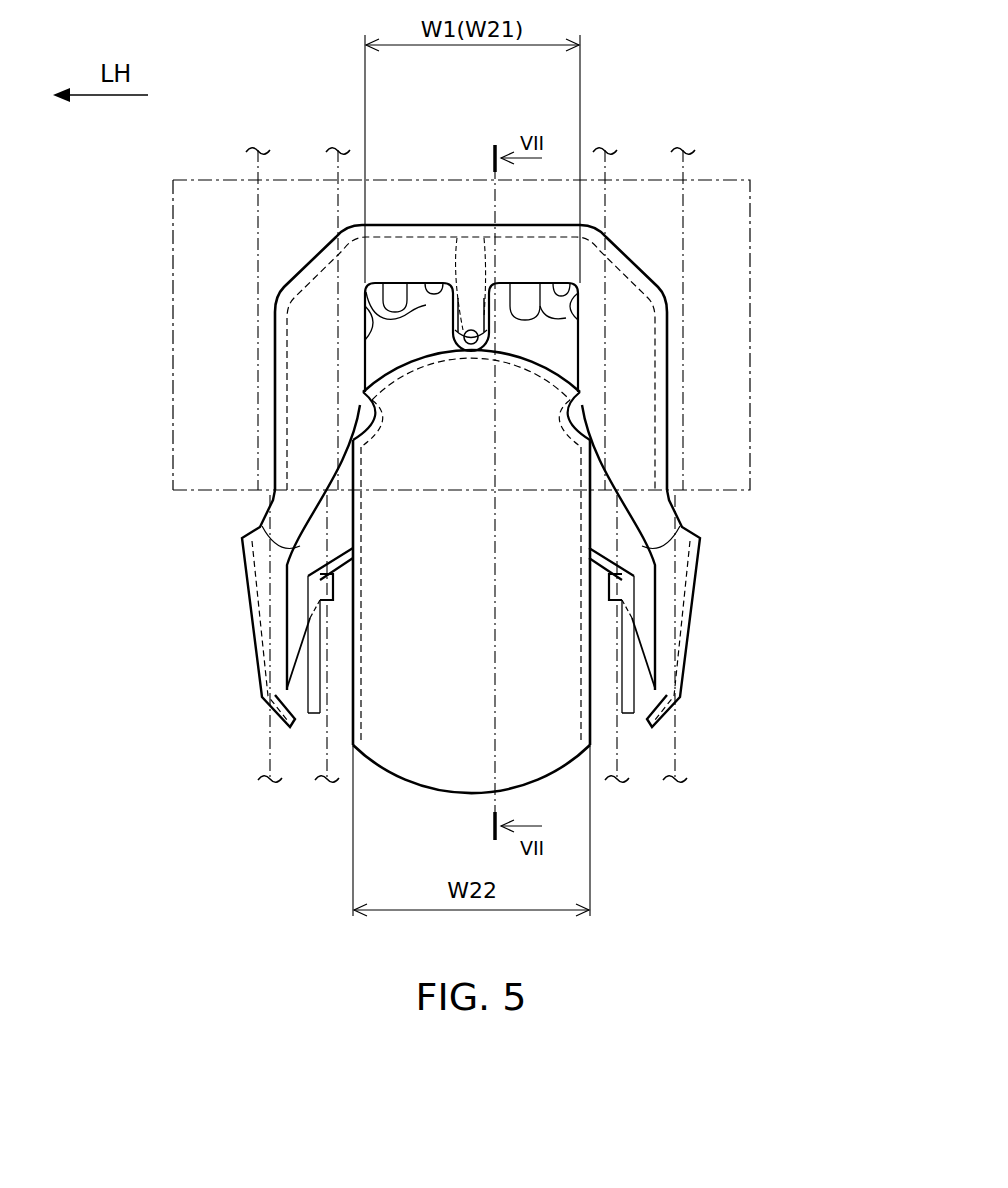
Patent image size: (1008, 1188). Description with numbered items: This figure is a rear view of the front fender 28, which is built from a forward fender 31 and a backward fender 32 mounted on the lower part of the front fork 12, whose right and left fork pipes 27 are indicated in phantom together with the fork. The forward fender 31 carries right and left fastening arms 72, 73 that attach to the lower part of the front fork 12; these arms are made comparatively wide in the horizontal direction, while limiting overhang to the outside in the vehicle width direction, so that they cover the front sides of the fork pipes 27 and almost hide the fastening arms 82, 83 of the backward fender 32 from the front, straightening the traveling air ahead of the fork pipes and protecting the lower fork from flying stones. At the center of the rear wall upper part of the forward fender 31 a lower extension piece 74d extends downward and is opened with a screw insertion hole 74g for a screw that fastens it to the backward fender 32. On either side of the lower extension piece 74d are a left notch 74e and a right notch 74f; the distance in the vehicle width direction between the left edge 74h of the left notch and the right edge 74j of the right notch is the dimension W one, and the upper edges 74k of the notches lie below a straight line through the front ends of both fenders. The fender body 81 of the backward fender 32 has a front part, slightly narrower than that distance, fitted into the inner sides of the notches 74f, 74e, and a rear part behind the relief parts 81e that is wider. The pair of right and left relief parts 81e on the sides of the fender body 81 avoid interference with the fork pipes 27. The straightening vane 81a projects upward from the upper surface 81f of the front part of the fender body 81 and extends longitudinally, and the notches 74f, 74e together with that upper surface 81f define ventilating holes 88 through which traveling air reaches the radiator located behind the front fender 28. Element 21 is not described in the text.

The front fork 12 is at (256, 258).
The front fender 28 is at (150, 286).
The fork pipes 27 is at (258, 333).
The housing 21 is at (752, 258).
The forward fender 31 is at (643, 266).
The lower extension piece 74d is at (366, 278).
The screw insertion hole 74g is at (458, 237).
The straightening vane 81a is at (487, 272).
The left notch 74e is at (400, 281).
The upper edges 74k is at (428, 281).
The right notch 74f is at (514, 291).
The left edge 74h is at (424, 298).
The right edge 74j is at (578, 298).
The ventilating holes 88 is at (412, 330).
The upper surface 81f is at (552, 358).
The relief parts 81e is at (366, 410).
The fender body 81 is at (537, 723).
The backward fender 32 is at (402, 775).
The left fastening arm 72 is at (249, 622).
The right fastening arm 73 is at (693, 641).
The left fastening arm 82 is at (313, 716).
The right fastening arm 83 is at (630, 716).